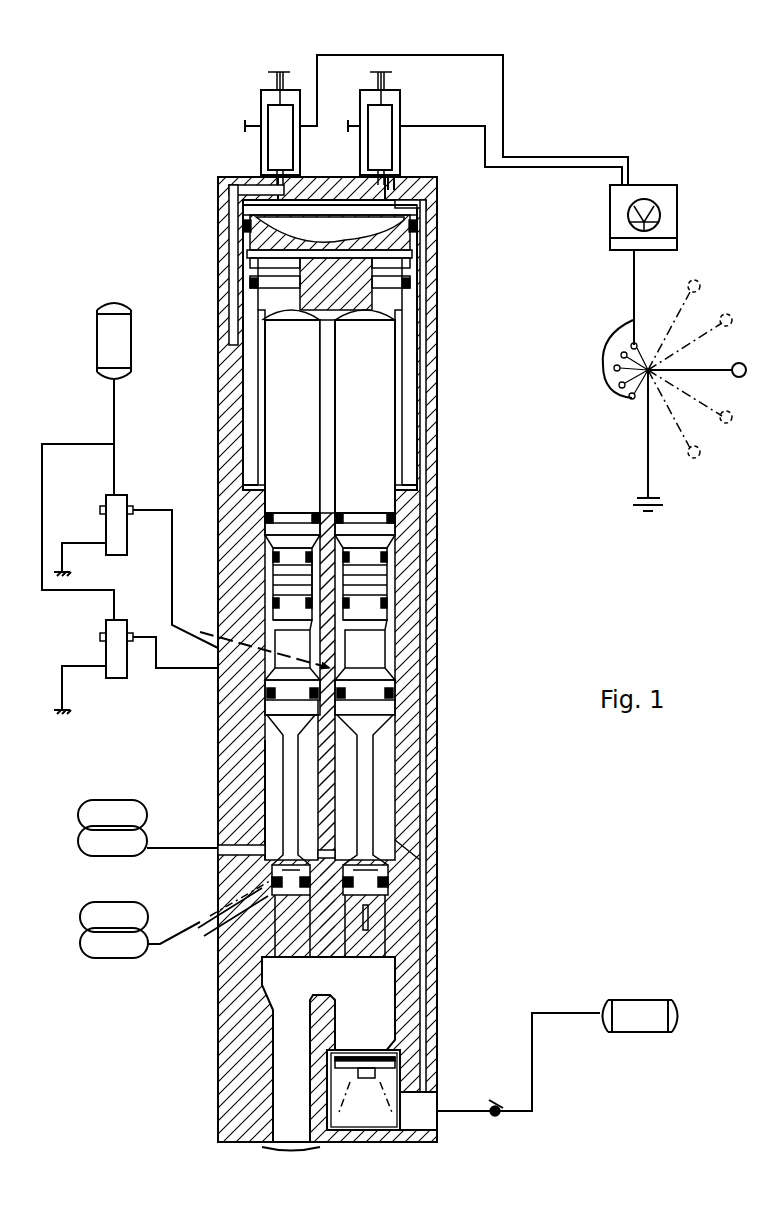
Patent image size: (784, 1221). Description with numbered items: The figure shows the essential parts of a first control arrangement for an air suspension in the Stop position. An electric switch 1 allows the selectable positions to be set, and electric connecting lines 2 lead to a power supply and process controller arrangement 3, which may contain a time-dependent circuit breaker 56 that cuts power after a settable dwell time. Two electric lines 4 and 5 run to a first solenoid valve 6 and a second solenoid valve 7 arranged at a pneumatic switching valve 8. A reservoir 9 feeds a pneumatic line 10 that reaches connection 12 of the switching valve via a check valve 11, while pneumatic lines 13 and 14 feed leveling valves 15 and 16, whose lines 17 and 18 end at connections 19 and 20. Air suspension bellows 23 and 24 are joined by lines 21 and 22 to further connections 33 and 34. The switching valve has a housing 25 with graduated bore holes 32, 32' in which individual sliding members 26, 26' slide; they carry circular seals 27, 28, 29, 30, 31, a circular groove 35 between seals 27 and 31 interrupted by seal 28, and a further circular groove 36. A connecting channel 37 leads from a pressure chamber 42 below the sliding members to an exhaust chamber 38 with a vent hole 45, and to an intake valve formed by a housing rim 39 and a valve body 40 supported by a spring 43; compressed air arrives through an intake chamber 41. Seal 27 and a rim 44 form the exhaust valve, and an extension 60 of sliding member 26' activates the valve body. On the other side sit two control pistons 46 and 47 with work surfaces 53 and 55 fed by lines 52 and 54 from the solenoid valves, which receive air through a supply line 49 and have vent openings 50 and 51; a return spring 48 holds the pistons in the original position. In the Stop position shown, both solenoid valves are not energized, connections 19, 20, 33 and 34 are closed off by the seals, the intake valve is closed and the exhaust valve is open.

The electric switch 1 is at (651, 440).
The electric connecting lines 2 is at (636, 302).
The power supply and process controller arrangement 3 is at (677, 225).
The electric line 4 is at (459, 125).
The electric line 5 is at (457, 54).
The first solenoid valve 6 is at (352, 84).
The second solenoid valve 7 is at (257, 73).
The pneumatic switching valve 8 is at (440, 650).
The reservoir 9 is at (110, 344).
The pneumatic line 10 is at (533, 1067).
The check valve 11 is at (495, 1120).
The connection 12 is at (418, 1118).
The pneumatic line 13 is at (118, 460).
The pneumatic line 14 is at (42, 488).
The leveling valve 15 is at (118, 510).
The leveling valve 16 is at (115, 652).
The line 17 is at (172, 530).
The line 18 is at (158, 656).
The connection 19 is at (268, 702).
The connection 20 is at (222, 675).
The line 21 is at (183, 845).
The line 22 is at (175, 946).
The air suspension bellows 23 is at (92, 820).
The air suspension bellows 24 is at (96, 918).
The housing 25 is at (405, 855).
The individual sliding member 26 is at (249, 416).
The individual sliding member 26' is at (418, 416).
The circular seal 27 is at (273, 878).
The circular seal 28 is at (266, 728).
The circular seal 29 is at (265, 520).
The circular seal 30 is at (273, 570).
The circular seal 31 is at (273, 604).
The bore hole 32 is at (219, 800).
The bore hole 32' is at (418, 790).
The connection 33 is at (232, 850).
The connection 34 is at (336, 852).
The circular groove 35 is at (396, 662).
The further circular groove 36 is at (390, 580).
The connecting channel 37 is at (335, 975).
The exhaust chamber 38 is at (283, 1000).
The housing rim 39 is at (375, 1062).
The valve body 40 is at (388, 1066).
The intake chamber 41 is at (364, 1108).
The pressure chamber 42 is at (372, 982).
The spring 43 is at (403, 1096).
The rim 44 is at (282, 1022).
The vent hole 45 is at (290, 1096).
The control piston 46 is at (408, 240).
The control piston 47 is at (395, 268).
The return spring 48 is at (398, 432).
The supply line 49 is at (423, 617).
The vent opening 50 is at (383, 70).
The vent opening 51 is at (280, 70).
The line 52 is at (398, 183).
The work surface 53 is at (240, 190).
The line 54 is at (243, 213).
The work surface 55 is at (270, 255).
The circuit breaker 56 is at (660, 243).
The extension 60 is at (370, 920).